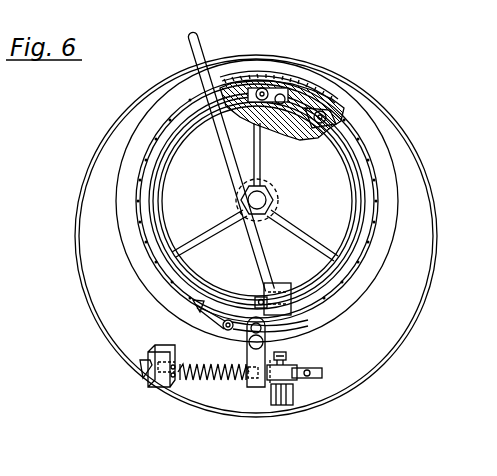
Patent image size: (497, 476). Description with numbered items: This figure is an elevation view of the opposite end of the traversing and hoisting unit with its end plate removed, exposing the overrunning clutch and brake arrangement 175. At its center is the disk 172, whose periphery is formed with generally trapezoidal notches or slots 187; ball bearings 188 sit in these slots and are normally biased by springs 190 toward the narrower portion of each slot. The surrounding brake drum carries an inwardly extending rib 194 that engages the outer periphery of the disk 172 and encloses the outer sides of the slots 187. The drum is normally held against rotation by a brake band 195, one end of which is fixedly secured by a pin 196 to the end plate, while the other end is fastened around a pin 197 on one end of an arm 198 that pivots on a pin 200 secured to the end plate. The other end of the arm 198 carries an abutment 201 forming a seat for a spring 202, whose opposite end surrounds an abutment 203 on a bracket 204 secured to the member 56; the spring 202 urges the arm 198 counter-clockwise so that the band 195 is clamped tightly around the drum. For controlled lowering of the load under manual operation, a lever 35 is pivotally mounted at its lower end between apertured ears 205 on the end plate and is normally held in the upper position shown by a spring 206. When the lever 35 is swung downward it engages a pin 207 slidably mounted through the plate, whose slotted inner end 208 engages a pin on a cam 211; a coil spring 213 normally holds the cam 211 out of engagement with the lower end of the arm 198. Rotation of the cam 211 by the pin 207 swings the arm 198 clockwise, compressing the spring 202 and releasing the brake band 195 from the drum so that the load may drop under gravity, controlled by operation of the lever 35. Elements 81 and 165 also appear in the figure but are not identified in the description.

The lever 35 is at (264, 256).
The member 56 is at (410, 326).
The housing wall 81 is at (421, 292).
The wheel rim 165 is at (380, 262).
The disk 172 is at (316, 100).
The overrunning clutch and brake arrangement 175 is at (378, 148).
The notches or slots 187 is at (249, 78).
The ball bearings 188 is at (265, 87).
The springs 190 is at (284, 94).
The inwardly extending rib 194 is at (318, 98).
The brake band 195 is at (384, 218).
The pin 196 is at (224, 330).
The pin 197 is at (300, 325).
The arm 198 is at (249, 355).
The pin 200 is at (270, 360).
The abutment 201 is at (240, 382).
The spring 202 is at (212, 382).
The abutment 203 is at (176, 384).
The bracket 204 is at (150, 362).
The apertured ears 205 is at (286, 285).
The spring 206 is at (258, 300).
The pin 207 is at (301, 394).
The slotted inner end 208 is at (316, 384).
The cam 211 is at (300, 370).
The coil spring 213 is at (318, 359).